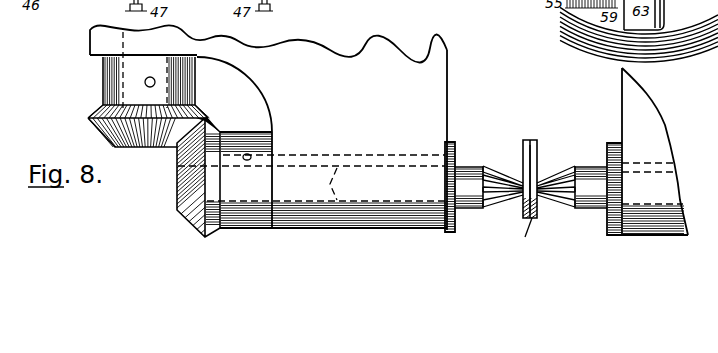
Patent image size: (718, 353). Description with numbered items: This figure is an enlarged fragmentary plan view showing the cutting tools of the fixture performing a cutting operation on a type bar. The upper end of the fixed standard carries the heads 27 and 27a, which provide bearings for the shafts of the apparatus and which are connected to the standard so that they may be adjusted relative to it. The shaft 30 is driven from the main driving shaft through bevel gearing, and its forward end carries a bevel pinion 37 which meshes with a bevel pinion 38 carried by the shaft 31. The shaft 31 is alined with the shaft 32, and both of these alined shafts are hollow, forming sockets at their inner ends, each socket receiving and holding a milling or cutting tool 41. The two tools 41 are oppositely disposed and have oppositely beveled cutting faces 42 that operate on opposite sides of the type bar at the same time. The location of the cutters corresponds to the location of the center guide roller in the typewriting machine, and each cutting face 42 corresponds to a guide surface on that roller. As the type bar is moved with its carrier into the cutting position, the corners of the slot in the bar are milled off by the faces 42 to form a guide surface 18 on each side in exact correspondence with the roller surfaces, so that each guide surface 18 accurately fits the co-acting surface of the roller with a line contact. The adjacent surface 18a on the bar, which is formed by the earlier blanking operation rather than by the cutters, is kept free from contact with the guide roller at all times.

The shaft 30 is at (178, 32).
The bevel pinion 37 is at (195, 120).
The bevel pinion 38 is at (213, 131).
The head 27 is at (337, 141).
The shaft 31 is at (300, 158).
The milling or cutting tool 41 is at (585, 176).
The beveled cutting face 42 is at (550, 180).
The guide surface 18 is at (537, 158).
The surface 18a is at (537, 163).
The head 27a is at (647, 151).
The shaft 32 is at (632, 164).